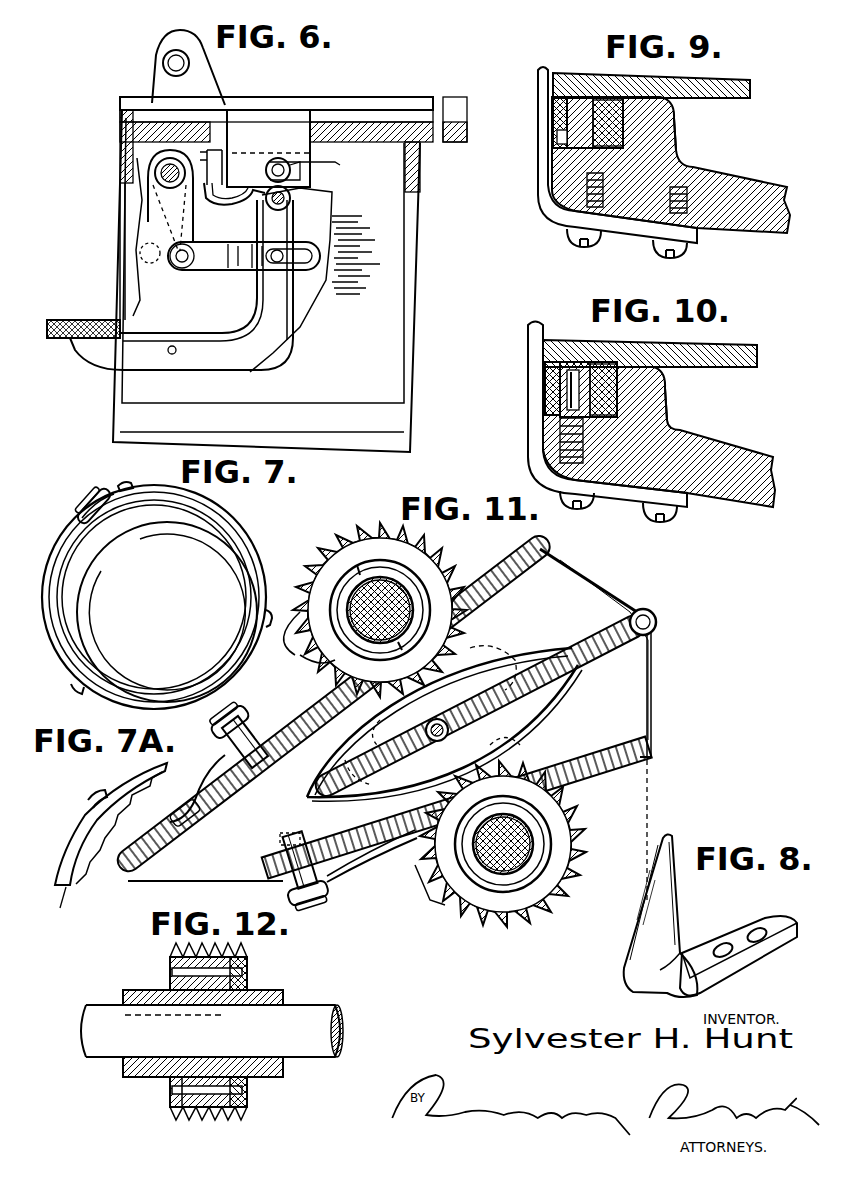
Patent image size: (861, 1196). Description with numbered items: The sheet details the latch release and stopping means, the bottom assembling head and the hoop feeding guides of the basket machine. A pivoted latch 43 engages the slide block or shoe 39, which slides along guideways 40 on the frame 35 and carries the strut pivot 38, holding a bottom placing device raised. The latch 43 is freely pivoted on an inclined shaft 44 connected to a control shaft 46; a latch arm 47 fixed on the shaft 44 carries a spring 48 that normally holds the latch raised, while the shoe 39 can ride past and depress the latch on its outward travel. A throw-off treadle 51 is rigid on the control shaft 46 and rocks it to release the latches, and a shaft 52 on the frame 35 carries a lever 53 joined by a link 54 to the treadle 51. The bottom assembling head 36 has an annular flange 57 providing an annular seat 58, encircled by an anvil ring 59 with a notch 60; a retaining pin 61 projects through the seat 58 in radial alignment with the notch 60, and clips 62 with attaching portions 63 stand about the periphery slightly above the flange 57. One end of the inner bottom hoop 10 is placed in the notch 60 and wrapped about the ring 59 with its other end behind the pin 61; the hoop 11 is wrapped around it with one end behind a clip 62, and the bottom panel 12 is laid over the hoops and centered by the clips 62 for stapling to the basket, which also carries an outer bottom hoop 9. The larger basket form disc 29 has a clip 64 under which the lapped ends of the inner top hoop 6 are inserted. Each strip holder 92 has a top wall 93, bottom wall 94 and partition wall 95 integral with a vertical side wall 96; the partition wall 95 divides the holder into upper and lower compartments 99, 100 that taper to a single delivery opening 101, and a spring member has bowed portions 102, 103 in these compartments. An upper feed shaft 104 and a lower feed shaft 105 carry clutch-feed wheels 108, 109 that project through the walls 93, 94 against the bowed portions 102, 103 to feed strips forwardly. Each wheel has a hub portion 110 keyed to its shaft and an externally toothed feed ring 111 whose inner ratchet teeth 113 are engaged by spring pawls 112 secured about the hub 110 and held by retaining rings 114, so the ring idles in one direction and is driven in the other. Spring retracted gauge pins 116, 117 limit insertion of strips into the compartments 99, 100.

In FIG. 7A, the inner top hoop 6 is at (72, 840).
In FIG. 7, the outer bottom hoop 9 is at (135, 540).
In FIG. 9, the inner bottom hoop 10 is at (593, 100).
In FIG. 10, the inner bottom hoop 10 is at (590, 364).
In FIG. 7, the inner bottom hoop 10 is at (245, 540).
In FIG. 9, the inner bottom hoop 11 is at (560, 118).
In FIG. 10, the inner bottom hoop 11 is at (552, 372).
In FIG. 7, the inner bottom hoop 11 is at (262, 568).
In FIG. 9, the bottom panel 12 is at (735, 78).
In FIG. 10, the bottom panel 12 is at (730, 348).
In FIG. 7A, the basket form disc 29 is at (54, 905).
In FIG. 6, the frame 35 is at (410, 313).
In FIG. 9, the bottom assembling disc 36 is at (742, 225).
In FIG. 10, the bottom assembling disc 36 is at (748, 455).
In FIG. 7, the bottom assembling disc 36 is at (200, 548).
In FIG. 6, the pivot 38 is at (177, 50).
In FIG. 6, the slide block 39 is at (157, 88).
In FIG. 6, the guideways 40 is at (350, 107).
In FIG. 6, the pivoted latch 43 is at (255, 140).
In FIG. 6, the inclined shaft 44 is at (292, 172).
In FIG. 6, the control shaft 46 is at (292, 202).
In FIG. 6, the latch arm 47 is at (222, 152).
In FIG. 6, the spring 48 is at (222, 207).
In FIG. 6, the throw-off treadle 51 is at (105, 358).
In FIG. 6, the shaft 52 is at (162, 172).
In FIG. 6, the lever 53 is at (168, 208).
In FIG. 6, the link 54 is at (210, 270).
In FIG. 9, the annular flange 57 is at (680, 138).
In FIG. 10, the annular flange 57 is at (670, 380).
In FIG. 9, the annular seat 58 is at (560, 138).
In FIG. 9, the anvil ring 59 is at (612, 128).
In FIG. 10, the anvil ring 59 is at (615, 408).
In FIG. 7, the notch 60 is at (78, 526).
In FIG. 10, the retaining pin 61 is at (565, 385).
In FIG. 7, the retaining pin 61 is at (94, 505).
In FIG. 9, the clips 62 is at (542, 170).
In FIG. 10, the clips 62 is at (530, 433).
In FIG. 7, the clips 62 is at (122, 480).
In FIG. 8, the clips 62 is at (665, 910).
In FIG. 9, the attaching portions 63 is at (620, 232).
In FIG. 10, the attaching portions 63 is at (605, 492).
In FIG. 8, the attaching portions 63 is at (735, 970).
In FIG. 7A, the clip 64 is at (92, 800).
In FIG. 11, the strip holders 92 is at (652, 652).
In FIG. 11, the top wall 93 is at (518, 565).
In FIG. 11, the bottom wall 94 is at (652, 758).
In FIG. 11, the partition wall 95 is at (638, 610).
In FIG. 11, the side wall 96 is at (650, 718).
In FIG. 11, the upper compartment 99 is at (580, 588).
In FIG. 11, the lower compartment 100 is at (630, 685).
In FIG. 11, the delivery opening 101 is at (185, 866).
In FIG. 11, the bowed portion 102 is at (462, 680).
In FIG. 11, the bowed portion 103 is at (475, 755).
In FIG. 11, the upper feed shaft 104 is at (432, 580).
In FIG. 12, the upper feed shaft 104 is at (320, 1030).
In FIG. 11, the lower feed shaft 105 is at (455, 908).
In FIG. 11, the clutch-feed wheel 108 is at (352, 528).
In FIG. 12, the clutch-feed wheel 108 is at (262, 1082).
In FIG. 11, the clutch-feed wheel 109 is at (535, 922).
In FIG. 11, the hub portion 110 is at (300, 645).
In FIG. 12, the hub portion 110 is at (128, 1068).
In FIG. 11, the toothed feed ring 111 is at (338, 555).
In FIG. 12, the toothed feed ring 111 is at (178, 957).
In FIG. 11, the spring pawls 112 is at (420, 560).
In FIG. 12, the spring pawls 112 is at (175, 980).
In FIG. 11, the ratchet teeth 113 is at (440, 875).
In FIG. 12, the ratchet teeth 113 is at (240, 995).
In FIG. 12, the retaining rings 114 is at (170, 1092).
In FIG. 11, the gauge pin 116 is at (228, 726).
In FIG. 11, the gauge pin 117 is at (310, 900).